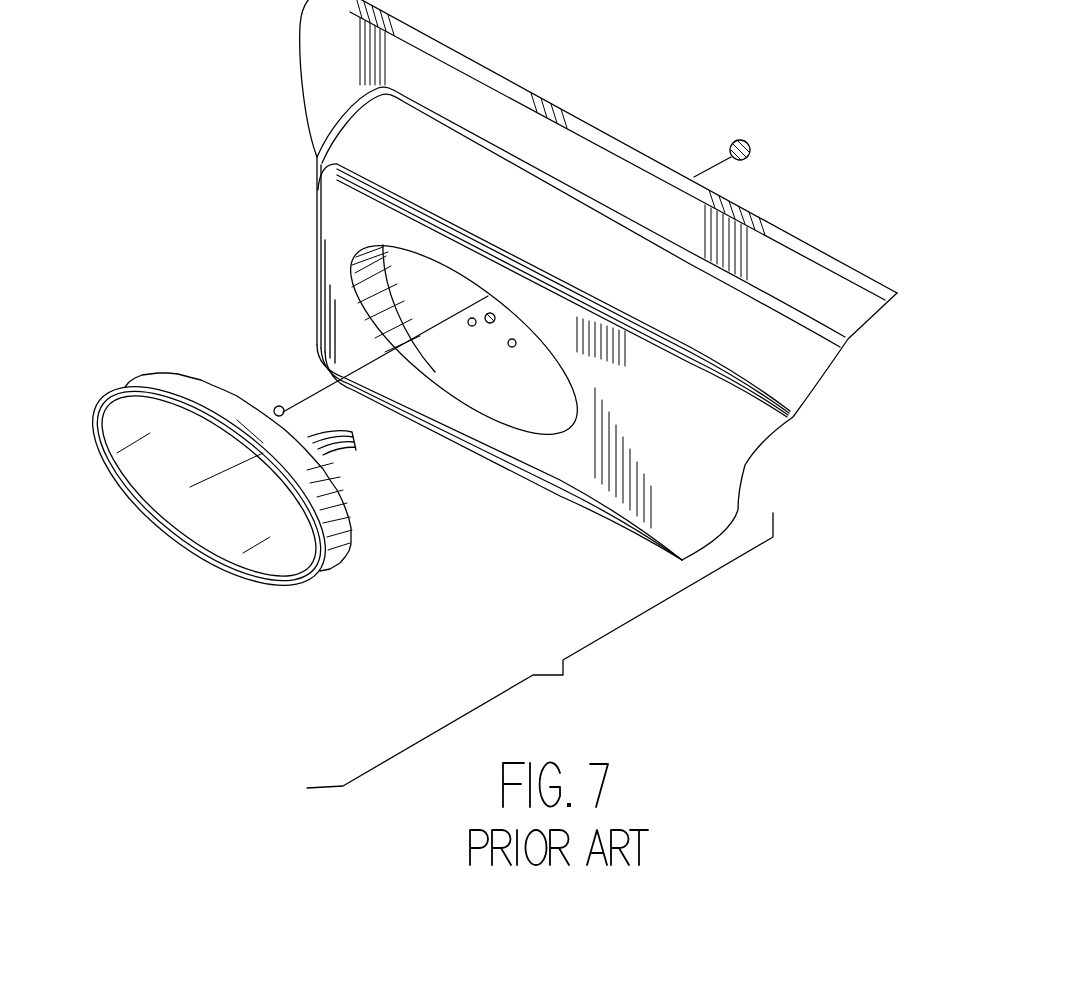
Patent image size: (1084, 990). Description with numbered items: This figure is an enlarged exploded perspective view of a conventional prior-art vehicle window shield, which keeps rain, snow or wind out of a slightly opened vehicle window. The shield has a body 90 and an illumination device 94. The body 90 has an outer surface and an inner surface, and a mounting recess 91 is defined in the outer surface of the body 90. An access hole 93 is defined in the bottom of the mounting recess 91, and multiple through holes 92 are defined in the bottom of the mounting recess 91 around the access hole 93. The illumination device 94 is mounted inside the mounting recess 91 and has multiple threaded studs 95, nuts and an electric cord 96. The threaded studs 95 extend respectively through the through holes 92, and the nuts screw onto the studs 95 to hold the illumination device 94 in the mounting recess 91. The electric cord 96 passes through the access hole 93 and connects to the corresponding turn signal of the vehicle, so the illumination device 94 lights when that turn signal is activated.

The body 90 is at (575, 116).
The mounting recess 91 is at (518, 420).
The through holes 92 is at (517, 346).
The access hole 93 is at (489, 325).
The illumination device 94 is at (210, 576).
The threaded studs 95 is at (277, 405).
The electric cord 96 is at (368, 448).